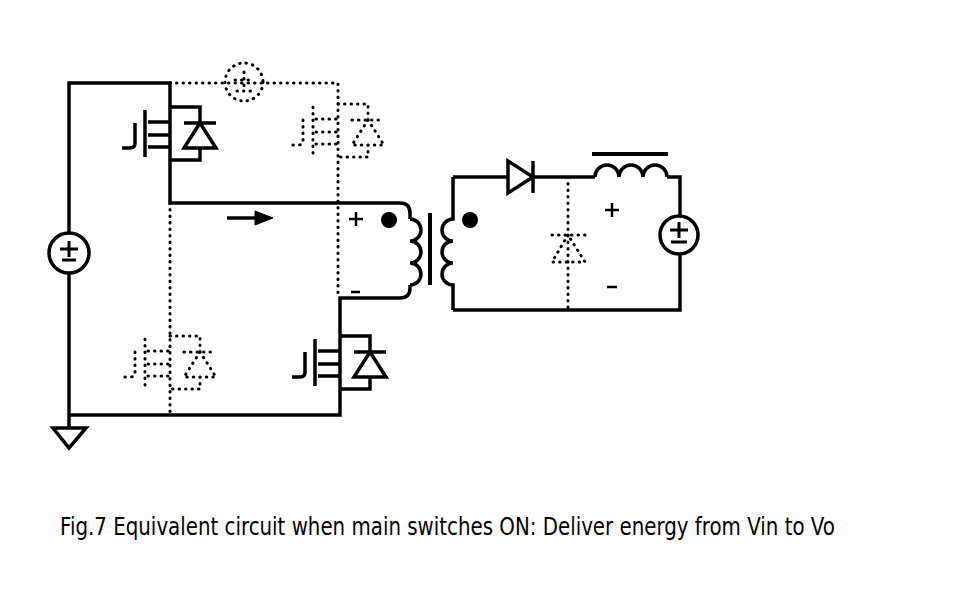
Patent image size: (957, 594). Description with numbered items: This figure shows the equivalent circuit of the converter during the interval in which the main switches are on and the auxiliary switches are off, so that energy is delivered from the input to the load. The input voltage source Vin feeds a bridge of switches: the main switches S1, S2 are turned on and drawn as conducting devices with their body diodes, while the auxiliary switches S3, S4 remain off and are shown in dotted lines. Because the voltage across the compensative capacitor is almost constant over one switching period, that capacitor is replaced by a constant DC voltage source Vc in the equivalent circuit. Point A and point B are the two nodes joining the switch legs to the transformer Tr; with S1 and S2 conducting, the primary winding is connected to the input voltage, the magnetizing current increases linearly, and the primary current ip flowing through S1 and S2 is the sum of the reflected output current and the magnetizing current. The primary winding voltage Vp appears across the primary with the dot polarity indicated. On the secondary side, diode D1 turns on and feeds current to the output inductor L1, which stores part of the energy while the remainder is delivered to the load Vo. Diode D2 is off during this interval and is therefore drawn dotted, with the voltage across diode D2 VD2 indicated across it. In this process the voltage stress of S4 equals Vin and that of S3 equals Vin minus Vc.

The input voltage source Vin is at (54, 237).
The main switch S1 is at (160, 154).
The main switch S2 is at (317, 362).
The auxiliary switch S3 is at (312, 134).
The auxiliary switch S4 is at (161, 345).
The constant DC voltage source Vc is at (262, 77).
The point A is at (154, 224).
The point B is at (306, 303).
The primary current ip is at (250, 233).
The primary winding voltage Vp is at (357, 252).
The transformer Tr is at (429, 225).
The diode D1 is at (522, 158).
The diode D2 is at (542, 253).
The voltage across diode D2 VD2 is at (612, 245).
The output inductor L1 is at (630, 150).
The load Vo is at (700, 220).